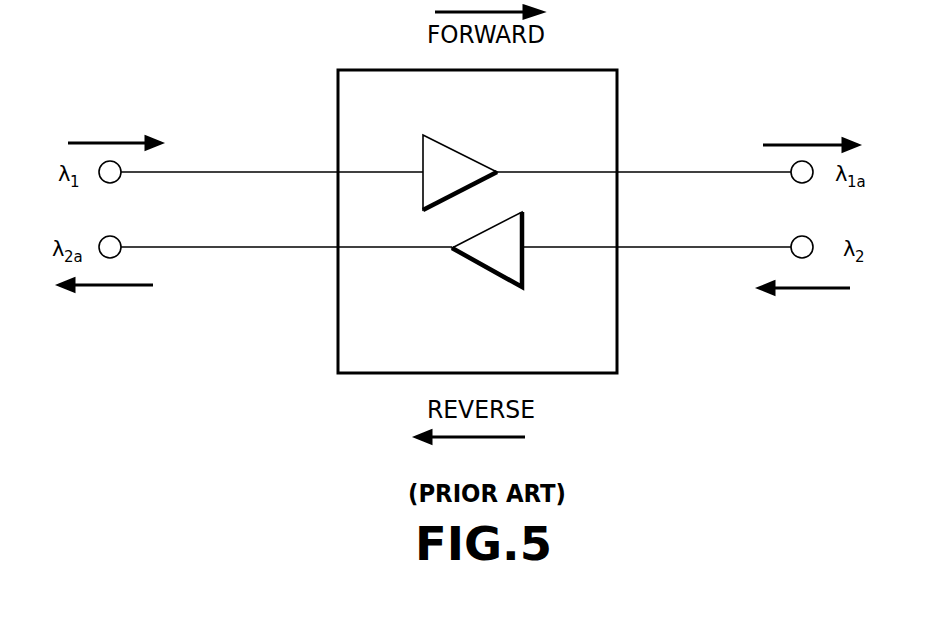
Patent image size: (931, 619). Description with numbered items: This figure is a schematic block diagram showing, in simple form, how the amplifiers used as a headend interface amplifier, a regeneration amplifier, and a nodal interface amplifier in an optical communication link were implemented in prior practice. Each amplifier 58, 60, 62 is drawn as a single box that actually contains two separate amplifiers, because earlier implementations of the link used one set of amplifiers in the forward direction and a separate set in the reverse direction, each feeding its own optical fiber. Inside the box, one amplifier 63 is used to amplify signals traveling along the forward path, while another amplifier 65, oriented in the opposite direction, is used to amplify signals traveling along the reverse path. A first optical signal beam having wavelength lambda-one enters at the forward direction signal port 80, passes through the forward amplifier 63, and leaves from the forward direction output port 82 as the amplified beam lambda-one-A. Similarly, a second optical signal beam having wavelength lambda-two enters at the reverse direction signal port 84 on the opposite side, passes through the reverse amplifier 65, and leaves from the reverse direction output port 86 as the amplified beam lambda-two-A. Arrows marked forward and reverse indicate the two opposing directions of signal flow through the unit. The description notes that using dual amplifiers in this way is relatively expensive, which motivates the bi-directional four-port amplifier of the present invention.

The headend interface amplifier 58 is at (525, 201).
The regeneration amplifier 60 is at (525, 201).
The nodal interface amplifier 62 is at (568, 69).
The amplifier 63 is at (453, 150).
The amplifier 65 is at (490, 270).
The forward direction signal port 80 is at (222, 171).
The forward direction output port 82 is at (680, 171).
The reverse direction signal port 84 is at (680, 246).
The reverse direction output port 86 is at (222, 246).